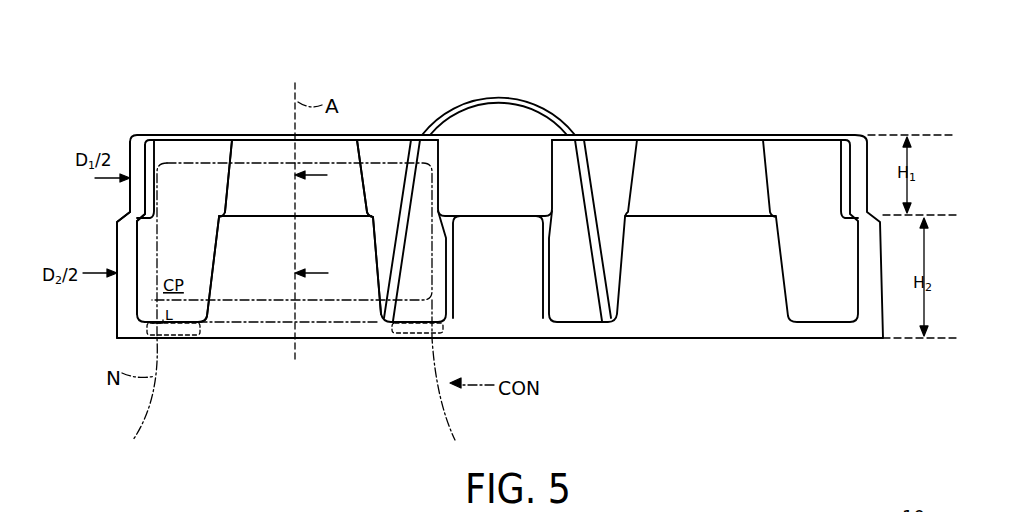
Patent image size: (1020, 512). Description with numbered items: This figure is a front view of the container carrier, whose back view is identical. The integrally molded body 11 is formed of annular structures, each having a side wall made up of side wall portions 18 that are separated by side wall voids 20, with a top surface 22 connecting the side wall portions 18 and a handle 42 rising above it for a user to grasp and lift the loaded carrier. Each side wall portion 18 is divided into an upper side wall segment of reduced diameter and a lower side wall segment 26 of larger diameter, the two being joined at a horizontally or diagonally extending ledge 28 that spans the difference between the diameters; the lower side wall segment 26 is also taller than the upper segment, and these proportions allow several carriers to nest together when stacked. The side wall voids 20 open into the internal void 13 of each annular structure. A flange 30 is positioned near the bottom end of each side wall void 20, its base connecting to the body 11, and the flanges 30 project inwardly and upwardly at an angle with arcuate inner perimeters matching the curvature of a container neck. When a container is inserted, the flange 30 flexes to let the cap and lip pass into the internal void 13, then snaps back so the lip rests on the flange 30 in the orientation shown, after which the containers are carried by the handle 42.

The body 11 is at (817, 118).
The internal void 13 is at (370, 150).
The side wall portions 18 is at (125, 262).
The side wall voids 20 is at (190, 190).
The top surface 22 is at (262, 133).
The lower side wall segment 26 is at (263, 285).
The ledge 28 is at (333, 183).
The flange 30 is at (147, 330).
The handle 42 is at (485, 100).